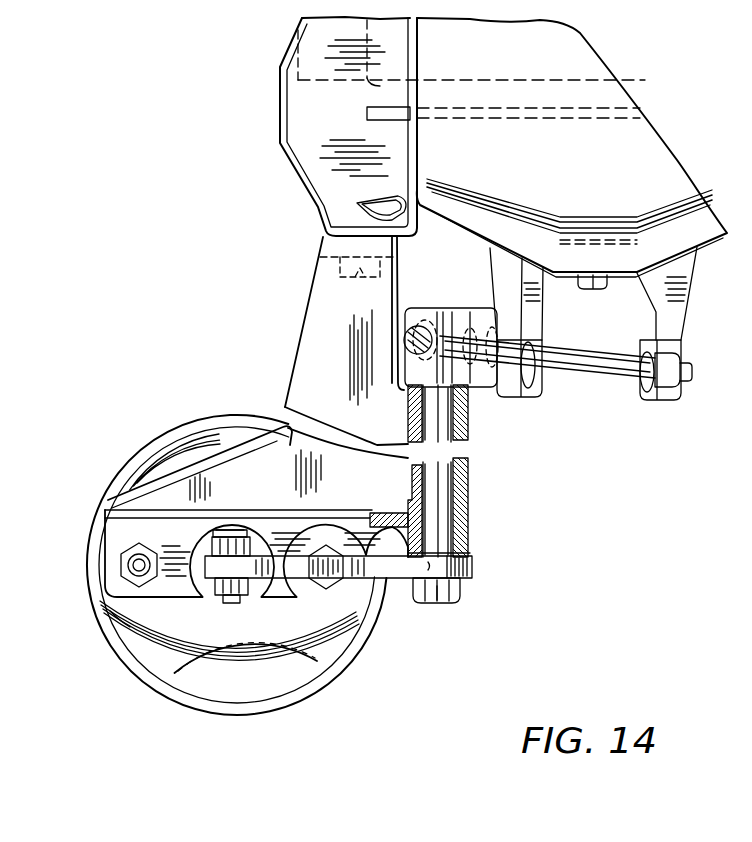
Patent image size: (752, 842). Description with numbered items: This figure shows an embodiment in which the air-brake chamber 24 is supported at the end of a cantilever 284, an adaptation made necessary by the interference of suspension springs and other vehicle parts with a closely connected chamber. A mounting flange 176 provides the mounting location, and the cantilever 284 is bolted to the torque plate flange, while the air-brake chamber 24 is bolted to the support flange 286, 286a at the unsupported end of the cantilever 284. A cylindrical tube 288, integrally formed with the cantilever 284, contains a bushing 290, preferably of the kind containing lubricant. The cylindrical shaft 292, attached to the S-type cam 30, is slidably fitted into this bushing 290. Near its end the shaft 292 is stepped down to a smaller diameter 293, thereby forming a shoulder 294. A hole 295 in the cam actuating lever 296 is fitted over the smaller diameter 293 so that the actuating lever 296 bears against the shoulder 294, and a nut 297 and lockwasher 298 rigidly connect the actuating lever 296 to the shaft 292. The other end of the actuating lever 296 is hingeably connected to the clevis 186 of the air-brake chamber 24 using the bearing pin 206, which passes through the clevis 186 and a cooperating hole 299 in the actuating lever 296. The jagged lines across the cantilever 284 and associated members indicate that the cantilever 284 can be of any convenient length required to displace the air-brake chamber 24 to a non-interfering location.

The mounting flange 176 is at (320, 232).
The S-type cam 30 is at (417, 312).
The cantilever 284 is at (315, 355).
The air-brake chamber 24 is at (99, 624).
The bearing pin 206 is at (228, 602).
The support flange 286 is at (113, 538).
The support flange 286a is at (345, 592).
The clevis 186 is at (216, 588).
The cooperating hole 299 is at (205, 530).
The cam actuating lever 296 is at (293, 580).
The cylindrical shaft 292 is at (440, 478).
The cylindrical tube 288 is at (466, 490).
The bushing 290 is at (467, 522).
The shoulder 294 is at (466, 540).
The hole 295 is at (468, 574).
The nut 297 is at (442, 582).
The lockwasher 298 is at (428, 570).
The smaller diameter 293 is at (436, 590).